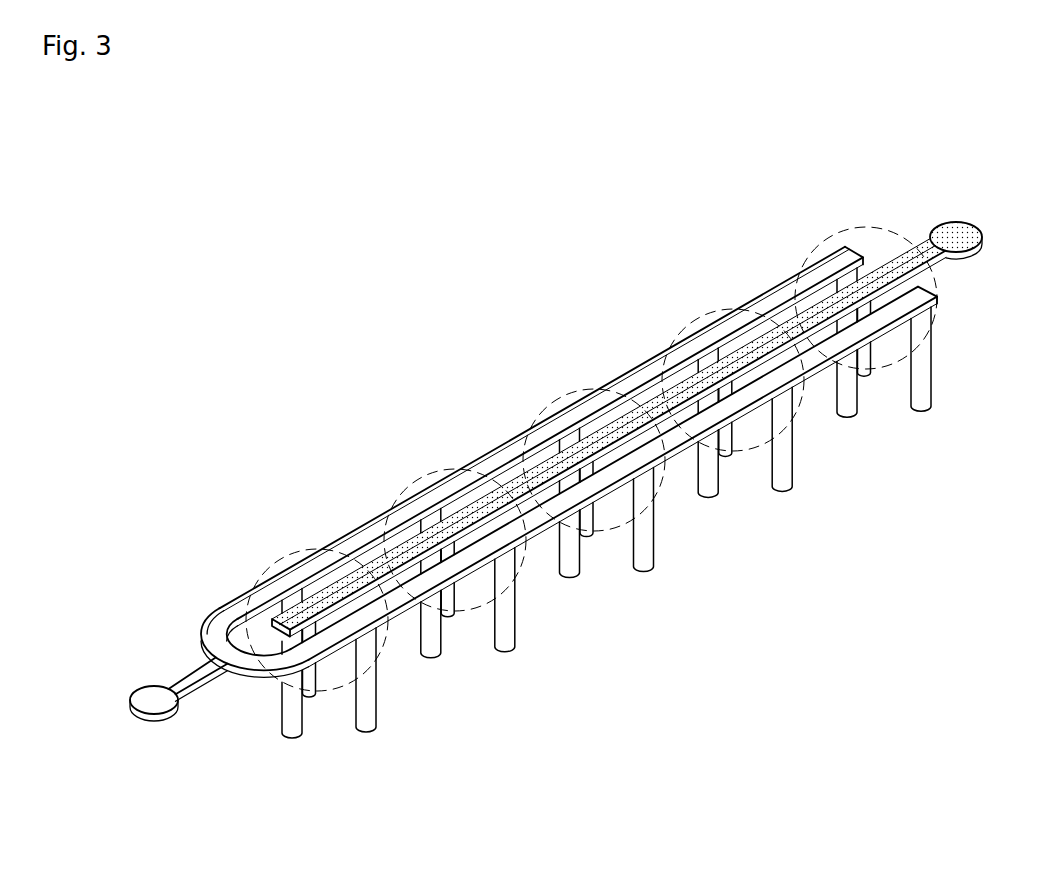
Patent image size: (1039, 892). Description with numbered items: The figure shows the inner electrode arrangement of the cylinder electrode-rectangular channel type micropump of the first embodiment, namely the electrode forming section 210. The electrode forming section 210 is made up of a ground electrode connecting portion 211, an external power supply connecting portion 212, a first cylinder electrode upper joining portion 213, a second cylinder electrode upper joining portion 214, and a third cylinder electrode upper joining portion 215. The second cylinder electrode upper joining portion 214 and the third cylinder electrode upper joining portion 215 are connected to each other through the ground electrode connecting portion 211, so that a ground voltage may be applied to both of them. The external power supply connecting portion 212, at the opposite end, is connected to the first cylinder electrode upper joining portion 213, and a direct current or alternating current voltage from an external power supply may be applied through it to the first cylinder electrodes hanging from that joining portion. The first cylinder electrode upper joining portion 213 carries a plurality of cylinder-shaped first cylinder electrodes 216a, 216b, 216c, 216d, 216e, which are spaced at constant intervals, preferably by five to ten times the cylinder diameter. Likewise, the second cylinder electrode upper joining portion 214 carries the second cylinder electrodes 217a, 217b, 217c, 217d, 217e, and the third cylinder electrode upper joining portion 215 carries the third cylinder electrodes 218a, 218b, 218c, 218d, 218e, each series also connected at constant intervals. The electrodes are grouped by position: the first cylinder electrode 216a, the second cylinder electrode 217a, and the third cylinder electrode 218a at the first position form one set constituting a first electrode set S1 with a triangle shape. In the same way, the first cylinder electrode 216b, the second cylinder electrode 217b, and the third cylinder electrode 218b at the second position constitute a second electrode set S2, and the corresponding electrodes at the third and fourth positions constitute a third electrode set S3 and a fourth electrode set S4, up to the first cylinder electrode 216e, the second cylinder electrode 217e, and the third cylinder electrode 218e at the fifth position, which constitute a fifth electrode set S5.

The electrode forming section 210 is at (757, 213).
The ground electrode connecting portion 211 is at (153, 708).
The external power supply connecting portion 212 is at (957, 222).
The first cylinder electrode upper joining portion 213 is at (398, 520).
The second cylinder electrode upper joining portion 214 is at (537, 412).
The third cylinder electrode upper joining portion 215 is at (930, 304).
The first cylinder electrode 216a is at (284, 730).
The first cylinder electrode 216b is at (423, 650).
The first cylinder electrode 216c is at (561, 570).
The first cylinder electrode 216d is at (700, 489).
The first cylinder electrode 216e is at (839, 409).
The second cylinder electrode 217a is at (312, 691).
The second cylinder electrode 217b is at (451, 611).
The second cylinder electrode 217c is at (589, 531).
The second cylinder electrode 217d is at (728, 451).
The second cylinder electrode 217e is at (867, 371).
The third cylinder electrode 218a is at (371, 728).
The third cylinder electrode 218b is at (510, 648).
The third cylinder electrode 218c is at (648, 568).
The third cylinder electrode 218d is at (787, 487).
The third cylinder electrode 218e is at (926, 407).
The first electrode set S1 is at (324, 549).
The second electrode set S2 is at (462, 469).
The third electrode set S3 is at (601, 389).
The fourth electrode set S4 is at (740, 309).
The fifth electrode set S5 is at (873, 227).